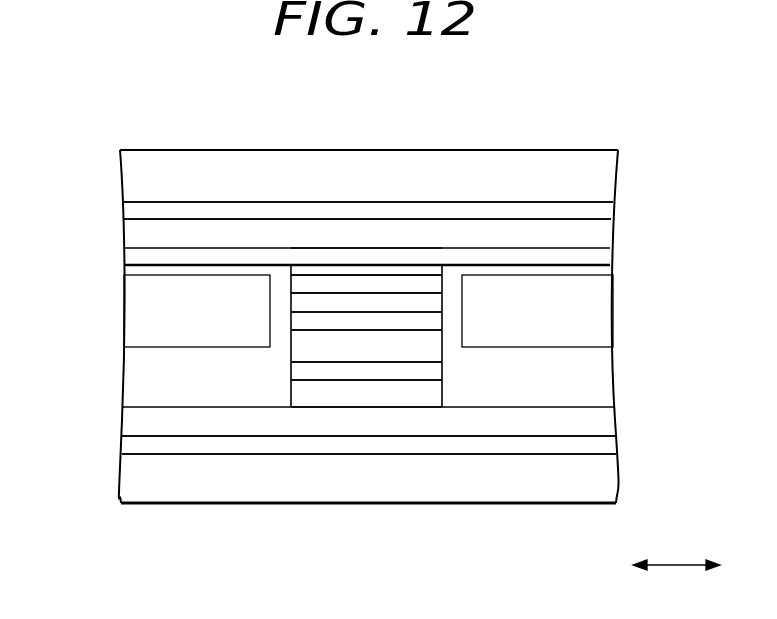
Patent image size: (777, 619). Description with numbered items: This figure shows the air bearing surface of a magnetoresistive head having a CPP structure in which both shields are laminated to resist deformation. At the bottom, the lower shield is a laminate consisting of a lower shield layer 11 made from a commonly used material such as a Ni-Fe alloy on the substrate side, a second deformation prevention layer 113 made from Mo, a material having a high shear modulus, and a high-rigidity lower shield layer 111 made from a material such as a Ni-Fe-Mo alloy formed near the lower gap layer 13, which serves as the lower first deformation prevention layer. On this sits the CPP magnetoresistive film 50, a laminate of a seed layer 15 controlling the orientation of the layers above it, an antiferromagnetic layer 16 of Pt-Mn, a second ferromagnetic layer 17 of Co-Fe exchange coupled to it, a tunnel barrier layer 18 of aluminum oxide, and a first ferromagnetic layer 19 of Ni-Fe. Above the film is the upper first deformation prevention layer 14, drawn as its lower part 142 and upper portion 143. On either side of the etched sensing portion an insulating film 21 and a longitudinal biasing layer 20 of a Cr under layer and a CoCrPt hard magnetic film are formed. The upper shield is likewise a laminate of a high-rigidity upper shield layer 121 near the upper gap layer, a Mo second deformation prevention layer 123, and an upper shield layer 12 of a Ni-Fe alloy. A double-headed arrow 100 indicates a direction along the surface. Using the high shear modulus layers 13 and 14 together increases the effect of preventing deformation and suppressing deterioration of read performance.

The lower shield layer 11 is at (133, 483).
The lower shield layer having high rigidity 111 is at (133, 421).
The second deformation prevention layer 113 is at (133, 452).
The upper shield layer 12 is at (133, 174).
The upper shield layer having high rigidity 121 is at (133, 241).
The second deformation prevention layer 123 is at (133, 209).
The lower first deformation prevention layer 13 is at (307, 397).
The upper first deformation prevention layer 14 is at (376, 168).
The lower part of the upper first deformation prevention layer 142 is at (390, 270).
The upper portion of the upper first deformation prevention layer 143 is at (445, 258).
The seed layer 15 is at (345, 372).
The antiferromagnetic layer 16 is at (375, 348).
The second ferromagnetic layer 17 is at (413, 318).
The tunnel barrier layer 18 is at (310, 302).
The first ferromagnetic layer 19 is at (342, 282).
The longitudinal biasing layer 20 is at (133, 313).
The insulating film 21 is at (133, 271).
The CPP magnetoresistive film 50 is at (338, 314).
The track width direction 100 is at (677, 563).